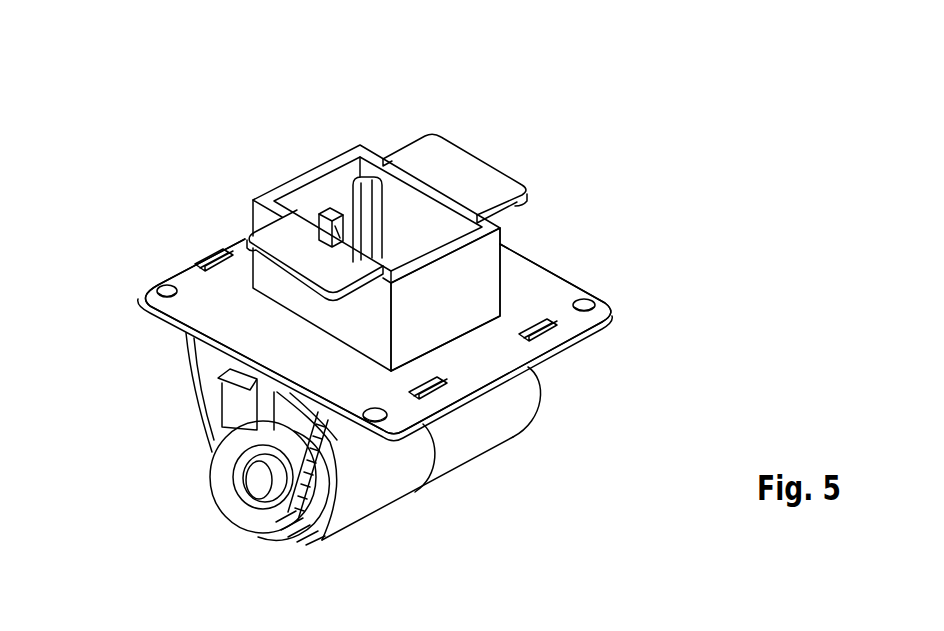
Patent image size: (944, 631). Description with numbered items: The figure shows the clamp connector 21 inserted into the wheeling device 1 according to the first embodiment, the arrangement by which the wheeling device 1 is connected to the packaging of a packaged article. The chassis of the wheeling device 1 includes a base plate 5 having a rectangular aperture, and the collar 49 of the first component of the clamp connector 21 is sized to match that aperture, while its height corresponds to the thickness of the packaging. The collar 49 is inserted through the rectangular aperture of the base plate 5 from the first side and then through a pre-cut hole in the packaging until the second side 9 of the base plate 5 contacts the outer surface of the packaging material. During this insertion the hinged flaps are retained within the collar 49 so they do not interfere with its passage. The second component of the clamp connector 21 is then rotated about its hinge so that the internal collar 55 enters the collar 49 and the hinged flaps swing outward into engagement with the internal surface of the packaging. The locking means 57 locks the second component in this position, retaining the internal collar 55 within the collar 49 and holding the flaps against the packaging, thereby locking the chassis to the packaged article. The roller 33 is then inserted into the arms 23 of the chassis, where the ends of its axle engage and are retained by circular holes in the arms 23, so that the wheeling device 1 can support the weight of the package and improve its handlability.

The wheeling device 1 is at (652, 279).
The base plate 5 is at (575, 338).
The second side 9 is at (483, 350).
The clamp connector 21 is at (290, 184).
The arms 23 is at (208, 387).
The roller 33 is at (405, 470).
The collar 49 is at (460, 293).
The internal collar 55 is at (368, 172).
The locking means 57 is at (330, 218).